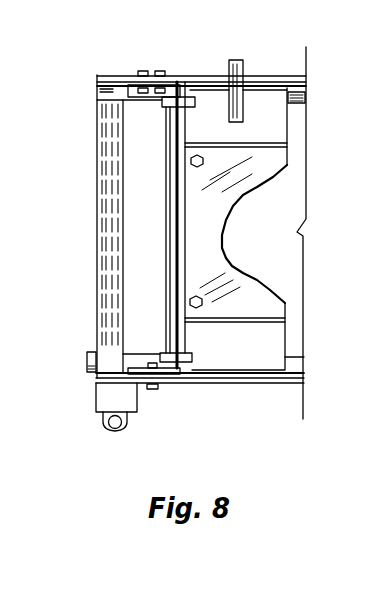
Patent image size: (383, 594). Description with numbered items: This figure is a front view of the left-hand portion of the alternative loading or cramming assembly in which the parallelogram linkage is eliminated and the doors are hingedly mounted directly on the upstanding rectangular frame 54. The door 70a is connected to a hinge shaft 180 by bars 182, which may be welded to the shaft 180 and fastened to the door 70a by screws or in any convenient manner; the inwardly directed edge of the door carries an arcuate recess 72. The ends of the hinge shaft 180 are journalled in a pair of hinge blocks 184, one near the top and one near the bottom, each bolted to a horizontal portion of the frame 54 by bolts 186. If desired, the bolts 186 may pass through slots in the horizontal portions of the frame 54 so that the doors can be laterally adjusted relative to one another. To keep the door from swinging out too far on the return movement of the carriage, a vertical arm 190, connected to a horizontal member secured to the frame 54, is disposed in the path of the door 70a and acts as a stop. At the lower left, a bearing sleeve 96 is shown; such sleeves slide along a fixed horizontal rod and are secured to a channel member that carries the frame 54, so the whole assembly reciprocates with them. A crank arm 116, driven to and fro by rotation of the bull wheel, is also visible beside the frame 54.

The frame 54 is at (104, 236).
The door 70a is at (270, 130).
The arcuate recess 72 is at (213, 246).
The bearing sleeve 96 is at (108, 425).
The crank arm 116 is at (92, 352).
The hinge shaft 180 is at (170, 145).
The bar 182 is at (177, 96).
The hinge block 184 is at (97, 74).
The bolt 186 is at (142, 72).
The vertical arm 190 is at (244, 107).